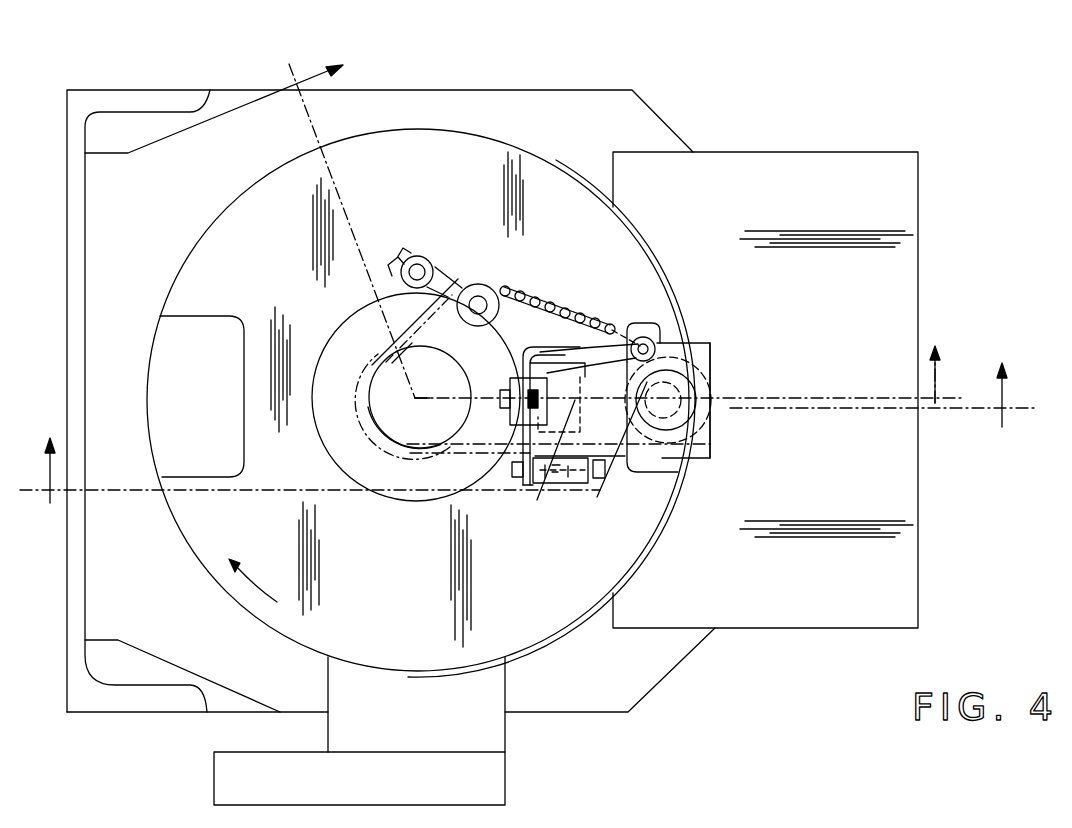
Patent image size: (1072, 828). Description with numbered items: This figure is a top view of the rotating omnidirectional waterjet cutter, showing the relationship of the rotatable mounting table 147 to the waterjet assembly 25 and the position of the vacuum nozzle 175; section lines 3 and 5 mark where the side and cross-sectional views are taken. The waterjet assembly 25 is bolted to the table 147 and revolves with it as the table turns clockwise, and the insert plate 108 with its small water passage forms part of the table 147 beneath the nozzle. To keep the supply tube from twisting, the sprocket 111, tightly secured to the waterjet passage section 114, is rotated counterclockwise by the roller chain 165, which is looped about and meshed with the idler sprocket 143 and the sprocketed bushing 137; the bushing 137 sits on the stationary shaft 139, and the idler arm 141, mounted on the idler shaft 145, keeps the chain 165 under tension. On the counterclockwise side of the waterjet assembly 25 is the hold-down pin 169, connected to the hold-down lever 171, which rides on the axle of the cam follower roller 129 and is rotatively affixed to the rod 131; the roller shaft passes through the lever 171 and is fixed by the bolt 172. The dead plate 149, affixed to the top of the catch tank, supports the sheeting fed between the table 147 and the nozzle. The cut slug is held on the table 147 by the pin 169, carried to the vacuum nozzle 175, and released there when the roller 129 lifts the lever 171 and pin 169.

The section line 3- 3 is at (626, 227).
The section line 5- 5 is at (528, 433).
The waterjet assembly 25 is at (678, 384).
The insert plate 108 is at (672, 464).
The sprocket 111 is at (700, 421).
The waterjet passage section 114 is at (700, 390).
The cam follower roller 129 is at (517, 408).
The rod 131 is at (549, 484).
The sprocketed bushing 137 is at (453, 368).
The stationary shaft 139 is at (437, 431).
The idler arm 141 is at (440, 270).
The idler sprocket 143 is at (483, 298).
The idler shaft 145 is at (421, 257).
The waterjet rotating mounting table 147 is at (419, 576).
The dead plate 149 is at (836, 504).
The roller chain 165 is at (564, 318).
The hold-down pin 169 is at (650, 341).
The hold-down lever 171 is at (556, 348).
The bolt 172 is at (547, 394).
The vacuum nozzle 175 is at (490, 702).